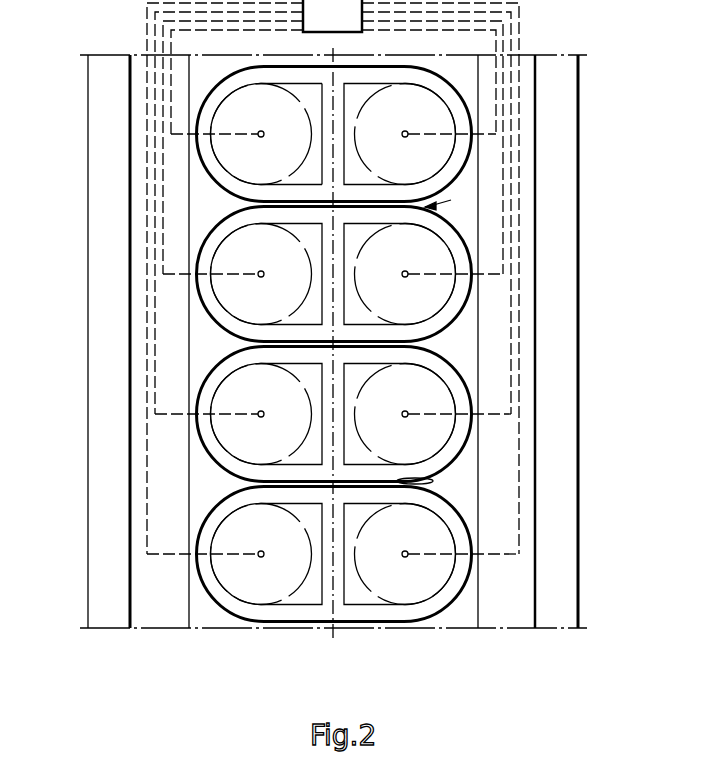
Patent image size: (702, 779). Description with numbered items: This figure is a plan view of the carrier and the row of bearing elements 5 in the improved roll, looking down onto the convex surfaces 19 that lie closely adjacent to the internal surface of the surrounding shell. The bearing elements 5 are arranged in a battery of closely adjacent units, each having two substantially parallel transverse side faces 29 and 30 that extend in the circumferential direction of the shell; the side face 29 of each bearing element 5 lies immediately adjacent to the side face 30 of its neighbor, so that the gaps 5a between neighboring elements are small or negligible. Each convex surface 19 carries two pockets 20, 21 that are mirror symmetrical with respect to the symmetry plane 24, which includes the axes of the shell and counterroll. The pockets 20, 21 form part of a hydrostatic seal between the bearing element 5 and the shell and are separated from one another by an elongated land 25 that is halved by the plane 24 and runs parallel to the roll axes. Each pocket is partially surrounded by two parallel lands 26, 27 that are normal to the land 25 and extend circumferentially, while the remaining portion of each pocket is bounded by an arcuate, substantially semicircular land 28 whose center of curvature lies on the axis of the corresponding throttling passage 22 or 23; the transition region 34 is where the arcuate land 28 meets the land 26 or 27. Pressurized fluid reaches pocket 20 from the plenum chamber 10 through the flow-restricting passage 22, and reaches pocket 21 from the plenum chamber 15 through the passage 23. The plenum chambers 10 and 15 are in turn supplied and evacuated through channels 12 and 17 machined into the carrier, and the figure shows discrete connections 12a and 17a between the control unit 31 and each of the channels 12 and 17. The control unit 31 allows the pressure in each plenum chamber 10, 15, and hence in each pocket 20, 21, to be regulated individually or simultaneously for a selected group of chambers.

The bearing element 5 is at (205, 172).
The gap 5a is at (451, 199).
The plenum chamber 10 is at (217, 383).
The channel 12 is at (138, 262).
The connection 12a is at (165, 40).
The plenum chamber 15 is at (448, 388).
The channel 17 is at (512, 259).
The connection 17a is at (497, 40).
The convex surface 19 is at (457, 237).
The pocket 20 is at (235, 107).
The pocket 21 is at (442, 113).
The throttling passage 22 is at (257, 134).
The throttling passage 23 is at (408, 135).
The symmetry plane 24 is at (332, 597).
The land 25 is at (325, 597).
The land 26 is at (310, 72).
The land 27 is at (295, 190).
The arcuate land 28 is at (452, 520).
The side face 29 is at (433, 480).
The side face 30 is at (388, 622).
The control unit 31 is at (357, 30).
The transition region 34 is at (432, 607).